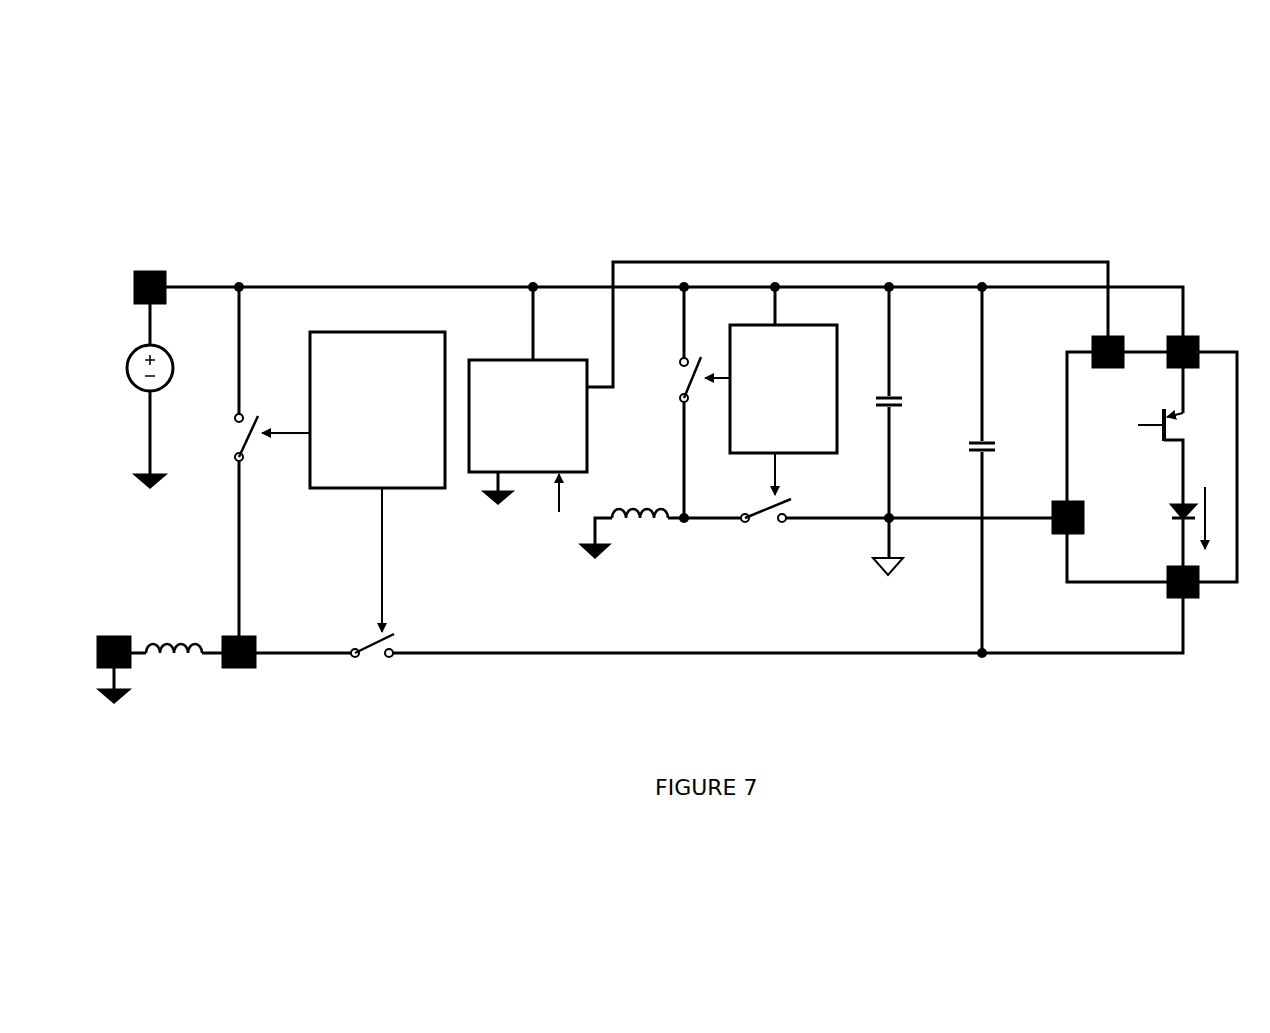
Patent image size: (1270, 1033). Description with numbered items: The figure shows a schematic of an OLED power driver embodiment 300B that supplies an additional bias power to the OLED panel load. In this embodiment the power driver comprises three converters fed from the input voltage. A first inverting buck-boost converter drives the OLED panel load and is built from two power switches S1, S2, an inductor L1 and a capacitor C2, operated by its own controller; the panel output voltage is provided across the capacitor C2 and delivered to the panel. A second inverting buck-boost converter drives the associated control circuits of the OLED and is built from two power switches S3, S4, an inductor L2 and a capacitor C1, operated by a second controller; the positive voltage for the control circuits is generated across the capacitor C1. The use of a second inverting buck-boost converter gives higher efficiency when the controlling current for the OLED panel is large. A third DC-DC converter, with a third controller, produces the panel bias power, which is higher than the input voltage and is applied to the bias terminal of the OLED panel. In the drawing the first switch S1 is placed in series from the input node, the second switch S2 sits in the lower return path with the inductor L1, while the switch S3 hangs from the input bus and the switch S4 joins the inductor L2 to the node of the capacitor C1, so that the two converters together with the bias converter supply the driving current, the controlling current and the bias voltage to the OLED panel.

The power driver embodiment 300B is at (662, 386).
The power switch S1 is at (253, 462).
The power switch S2 is at (372, 668).
The power switch S3 is at (687, 402).
The power switch S4 is at (766, 527).
The inductor L1 is at (176, 673).
The inductor L2 is at (633, 517).
The capacitor C1 is at (875, 431).
The capacitor C2 is at (966, 470).